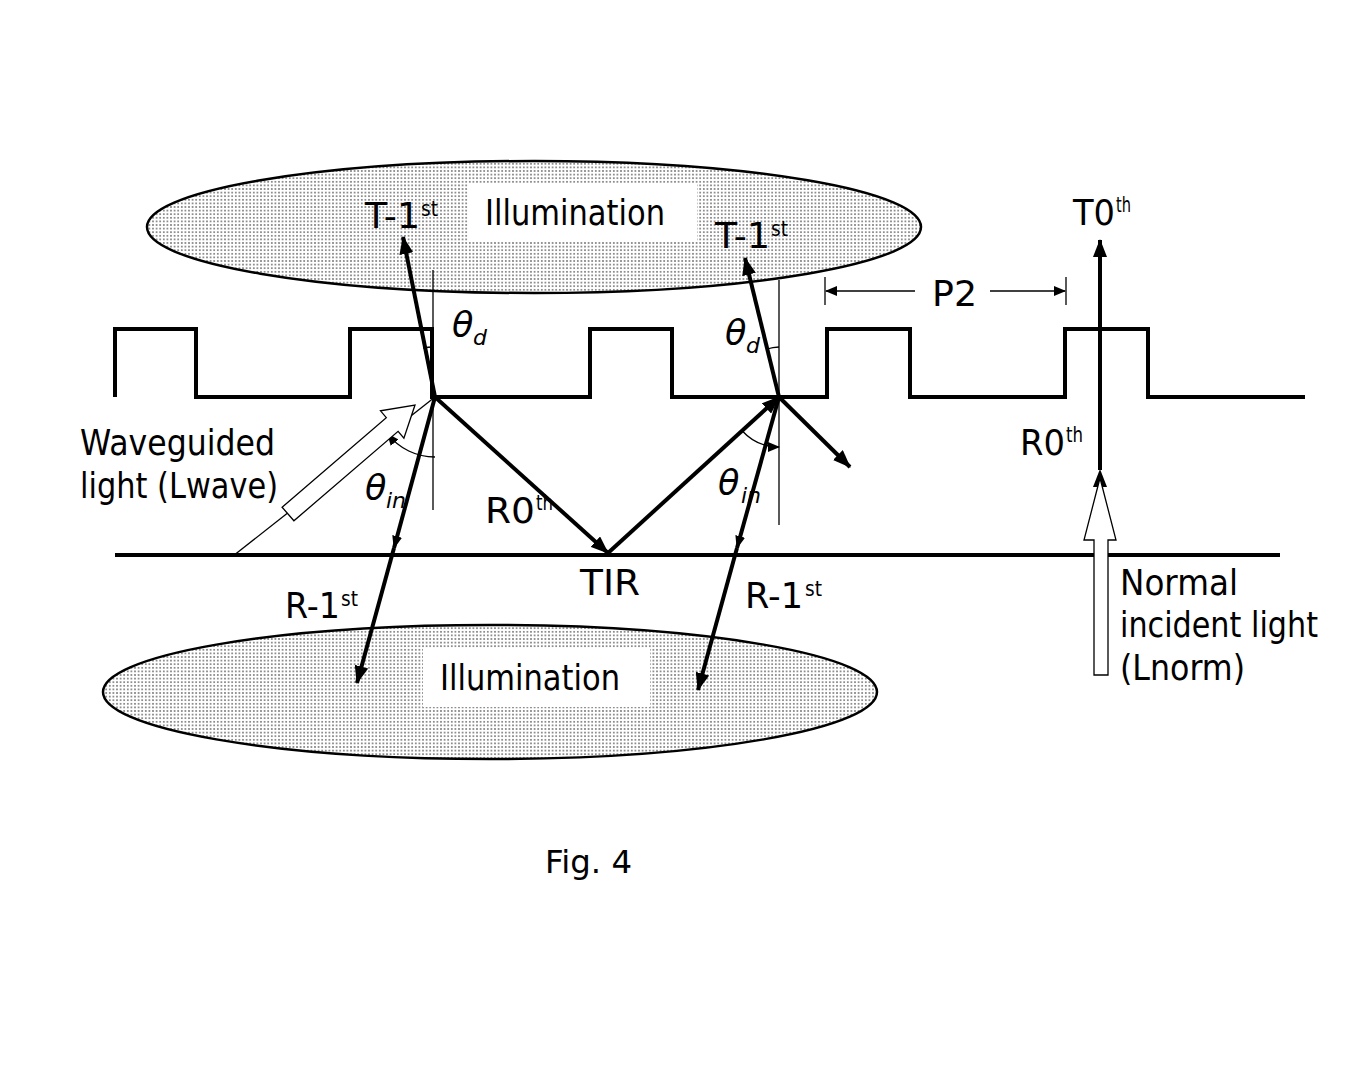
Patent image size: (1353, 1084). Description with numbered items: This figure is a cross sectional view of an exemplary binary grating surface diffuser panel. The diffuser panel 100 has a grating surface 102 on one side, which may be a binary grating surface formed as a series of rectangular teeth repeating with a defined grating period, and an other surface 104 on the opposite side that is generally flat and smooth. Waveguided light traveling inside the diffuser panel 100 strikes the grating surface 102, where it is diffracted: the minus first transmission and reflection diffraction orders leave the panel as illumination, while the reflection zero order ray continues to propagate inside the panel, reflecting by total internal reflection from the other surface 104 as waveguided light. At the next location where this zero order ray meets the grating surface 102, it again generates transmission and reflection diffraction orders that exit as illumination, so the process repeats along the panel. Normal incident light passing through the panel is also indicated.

The diffuser panel 100 is at (692, 451).
The grating surface 102 is at (165, 325).
The other surface 104 is at (175, 562).